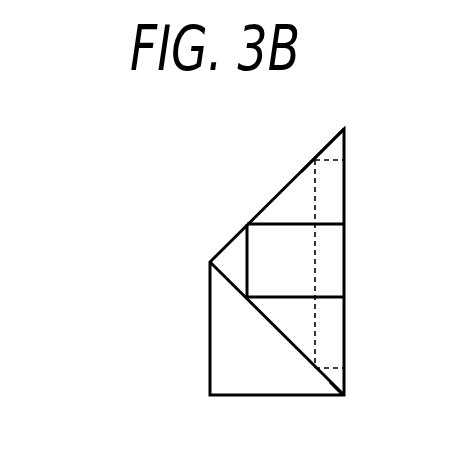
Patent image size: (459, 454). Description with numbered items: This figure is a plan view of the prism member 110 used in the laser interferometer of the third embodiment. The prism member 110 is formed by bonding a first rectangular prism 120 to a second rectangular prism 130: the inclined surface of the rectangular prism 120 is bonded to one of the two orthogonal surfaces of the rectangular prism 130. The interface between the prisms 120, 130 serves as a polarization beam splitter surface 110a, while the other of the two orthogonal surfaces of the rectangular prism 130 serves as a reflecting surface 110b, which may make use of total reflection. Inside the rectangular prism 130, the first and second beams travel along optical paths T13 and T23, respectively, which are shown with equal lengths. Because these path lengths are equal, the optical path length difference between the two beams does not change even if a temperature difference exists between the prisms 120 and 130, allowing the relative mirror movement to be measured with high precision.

The prism member 110 is at (90, 190).
The second rectangular prism 130 is at (290, 205).
The first rectangular prism 120 is at (222, 300).
The optical path T13 is at (281, 298).
The optical path T23 is at (314, 332).
The polarization beam splitter surface 110a is at (327, 383).
The reflecting surface 110b is at (297, 172).